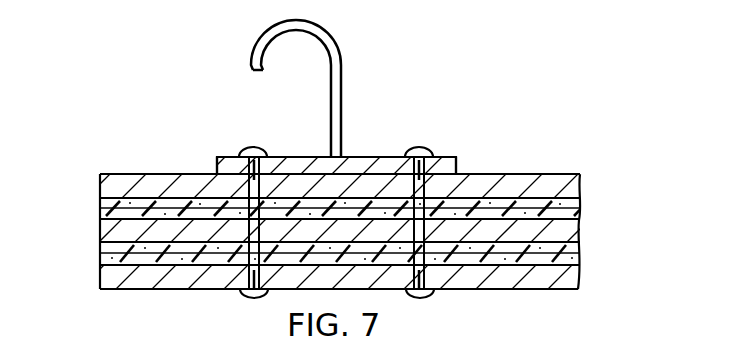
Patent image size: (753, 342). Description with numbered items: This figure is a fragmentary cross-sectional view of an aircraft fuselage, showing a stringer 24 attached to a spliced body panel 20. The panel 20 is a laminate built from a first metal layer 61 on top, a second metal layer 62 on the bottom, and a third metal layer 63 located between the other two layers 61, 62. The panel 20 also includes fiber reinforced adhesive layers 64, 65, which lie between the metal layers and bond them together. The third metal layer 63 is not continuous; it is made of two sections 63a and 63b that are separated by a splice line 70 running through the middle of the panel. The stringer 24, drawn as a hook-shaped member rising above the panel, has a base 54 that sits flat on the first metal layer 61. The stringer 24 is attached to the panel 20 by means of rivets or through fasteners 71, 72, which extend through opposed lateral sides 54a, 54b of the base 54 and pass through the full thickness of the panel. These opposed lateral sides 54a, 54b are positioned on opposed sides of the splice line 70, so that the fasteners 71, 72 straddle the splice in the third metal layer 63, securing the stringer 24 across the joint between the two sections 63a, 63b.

The spliced body panel 20 is at (581, 173).
The stringer 24 is at (341, 52).
The base 54 is at (353, 156).
The lateral side of the base 54a is at (218, 164).
The lateral side of the base 54b is at (456, 166).
The first metal layer 61 is at (100, 182).
The second metal layer 62 is at (100, 272).
The third metal layer 63 is at (100, 221).
The section of the third metal layer 63a is at (213, 236).
The section of the third metal layer 63b is at (503, 237).
The fiber reinforced adhesive layer 64 is at (580, 216).
The fiber reinforced adhesive layer 65 is at (580, 259).
The splice line 70 is at (320, 247).
The rivet or through fastener 71 is at (255, 148).
The rivet or through fastener 72 is at (421, 148).